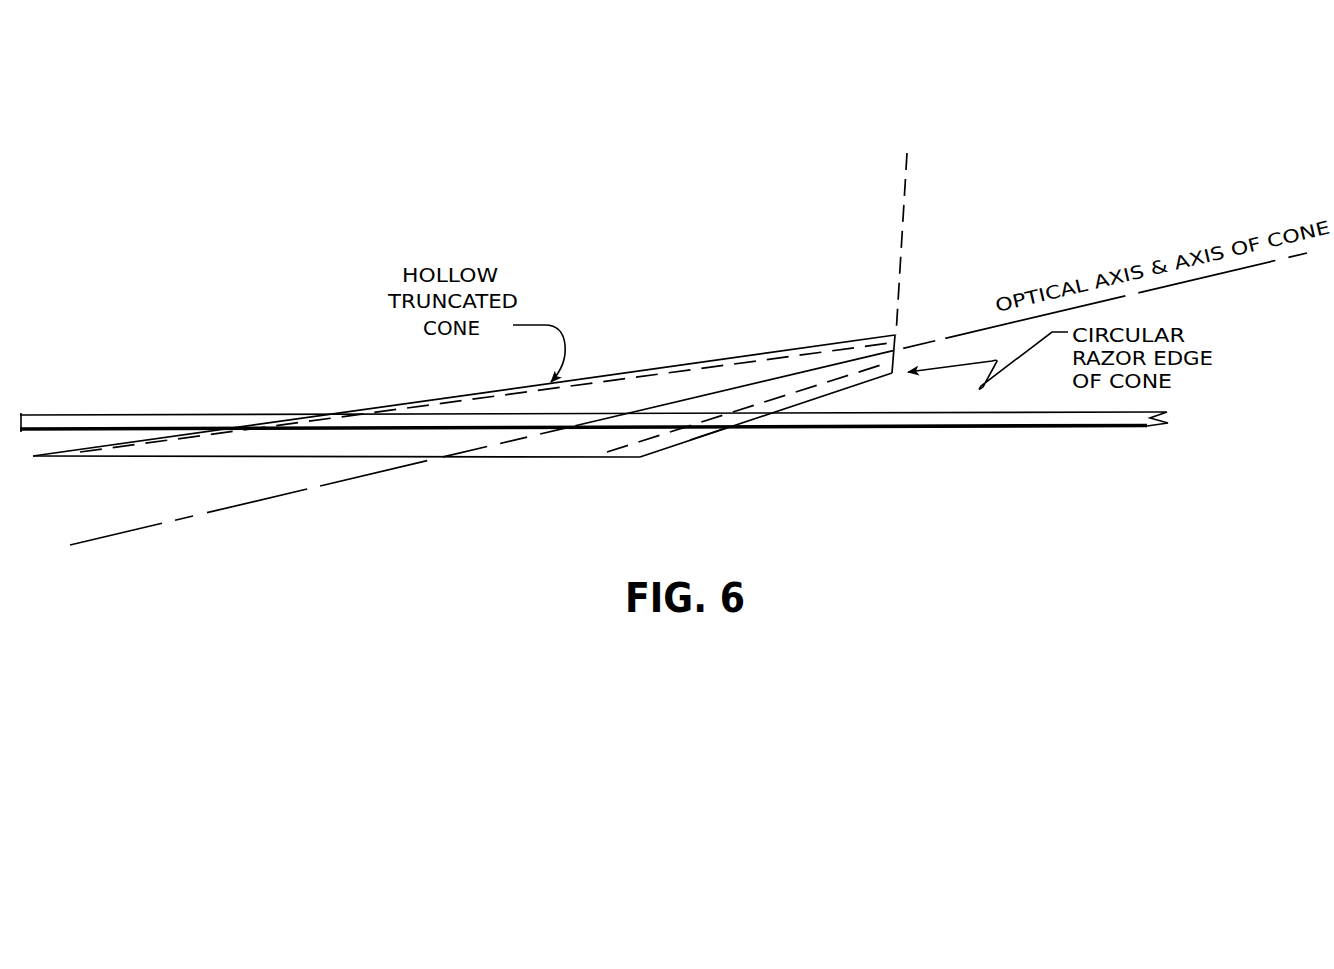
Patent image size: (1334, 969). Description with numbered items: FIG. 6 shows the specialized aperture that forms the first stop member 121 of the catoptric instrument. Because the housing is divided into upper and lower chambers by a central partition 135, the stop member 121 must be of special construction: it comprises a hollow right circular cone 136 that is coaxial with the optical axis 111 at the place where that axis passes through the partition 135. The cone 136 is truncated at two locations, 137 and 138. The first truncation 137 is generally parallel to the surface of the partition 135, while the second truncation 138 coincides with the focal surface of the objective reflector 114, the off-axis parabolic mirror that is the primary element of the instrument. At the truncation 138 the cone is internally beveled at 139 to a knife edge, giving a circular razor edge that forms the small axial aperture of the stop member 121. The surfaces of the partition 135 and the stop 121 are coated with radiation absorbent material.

The optical axis 111 is at (250, 502).
The reflector 114 is at (901, 249).
The first stop member 121 is at (709, 438).
The central partition 135 is at (100, 415).
The hollow right circular cone 136 is at (735, 377).
The truncation 137 is at (578, 457).
The truncation 138 is at (898, 340).
The knife edge bevel 139 is at (893, 372).